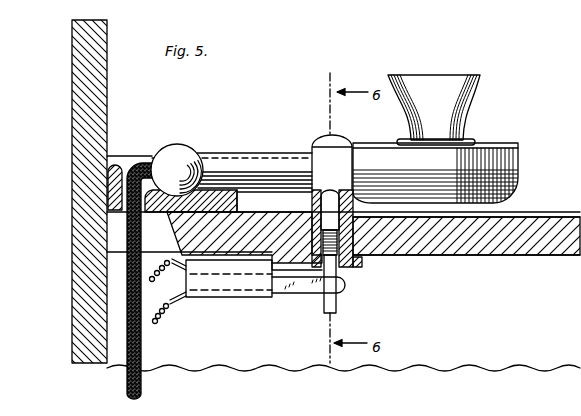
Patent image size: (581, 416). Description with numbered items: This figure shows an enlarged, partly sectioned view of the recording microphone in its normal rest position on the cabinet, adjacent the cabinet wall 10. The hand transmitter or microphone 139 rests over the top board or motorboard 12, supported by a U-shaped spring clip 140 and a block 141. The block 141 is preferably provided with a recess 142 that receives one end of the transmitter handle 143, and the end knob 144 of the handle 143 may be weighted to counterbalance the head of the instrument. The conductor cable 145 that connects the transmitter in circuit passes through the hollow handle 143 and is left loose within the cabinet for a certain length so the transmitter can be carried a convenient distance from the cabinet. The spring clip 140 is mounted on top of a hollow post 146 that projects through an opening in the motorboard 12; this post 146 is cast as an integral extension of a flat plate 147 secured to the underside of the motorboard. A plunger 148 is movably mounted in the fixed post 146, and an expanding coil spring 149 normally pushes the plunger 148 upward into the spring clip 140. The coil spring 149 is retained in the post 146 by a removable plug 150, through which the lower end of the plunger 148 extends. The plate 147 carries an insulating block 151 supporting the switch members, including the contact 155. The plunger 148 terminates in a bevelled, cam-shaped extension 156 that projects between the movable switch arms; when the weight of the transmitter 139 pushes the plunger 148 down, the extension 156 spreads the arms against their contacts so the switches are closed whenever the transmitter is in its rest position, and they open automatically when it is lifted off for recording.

The wall panel 10 is at (72, 298).
The top board 12 is at (514, 233).
The hand transmitter 139 is at (506, 166).
The spring clip 140 is at (332, 134).
The block 141 is at (212, 192).
The recess 142 is at (258, 188).
The transmitter handle 143 is at (240, 156).
The end knob 144 is at (179, 144).
The conductor cable 145 is at (126, 380).
The hollow post 146 is at (354, 213).
The flat plate 147 is at (256, 258).
The plunger 148 is at (311, 197).
The expanding coil spring 149 is at (412, 256).
The removable plug 150 is at (345, 282).
The insulating block 151 is at (215, 272).
The contact 155 is at (298, 289).
The bevelled extension 156 is at (337, 296).